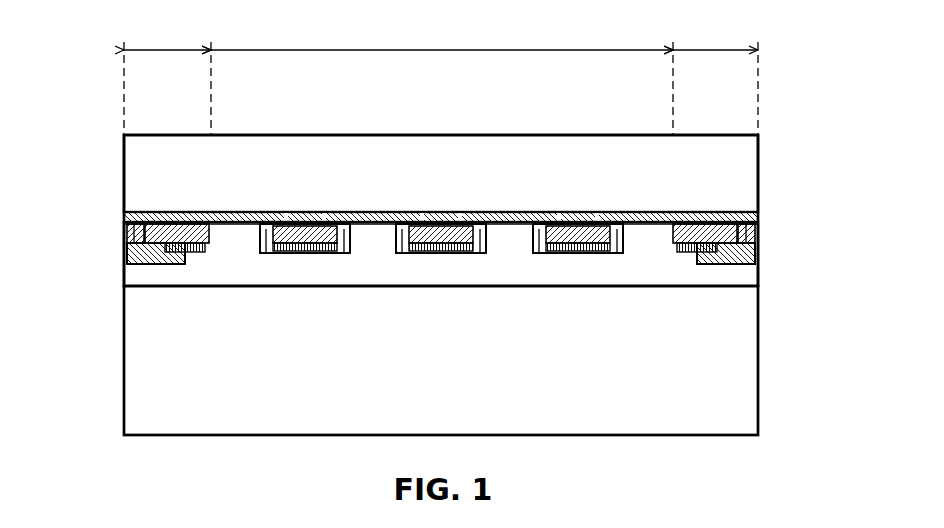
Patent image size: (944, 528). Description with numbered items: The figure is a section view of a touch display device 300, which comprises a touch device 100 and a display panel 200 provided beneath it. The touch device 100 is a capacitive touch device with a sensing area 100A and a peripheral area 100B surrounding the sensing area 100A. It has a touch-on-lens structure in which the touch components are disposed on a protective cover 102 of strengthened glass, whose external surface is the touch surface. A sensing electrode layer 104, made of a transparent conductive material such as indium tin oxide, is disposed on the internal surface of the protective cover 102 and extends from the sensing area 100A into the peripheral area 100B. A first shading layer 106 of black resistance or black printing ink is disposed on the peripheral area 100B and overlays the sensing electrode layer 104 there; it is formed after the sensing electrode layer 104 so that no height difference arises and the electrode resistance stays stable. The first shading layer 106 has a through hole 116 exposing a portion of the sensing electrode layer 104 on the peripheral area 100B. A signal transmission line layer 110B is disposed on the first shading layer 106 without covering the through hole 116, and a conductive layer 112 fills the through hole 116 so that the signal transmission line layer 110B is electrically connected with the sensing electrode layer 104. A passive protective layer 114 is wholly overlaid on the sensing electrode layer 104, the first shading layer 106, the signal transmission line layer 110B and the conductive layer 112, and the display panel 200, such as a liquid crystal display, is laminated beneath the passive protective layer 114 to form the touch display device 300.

The touch device 100 is at (762, 284).
The sensing area 100A is at (442, 75).
The peripheral area 100B is at (441, 75).
The protective cover 102 is at (131, 162).
The sensing electrode layer 104 is at (133, 213).
The first shading layer 106 is at (131, 232).
The signal transmission line layer 110B is at (195, 254).
The conductive layer 112 is at (131, 256).
The passive protective layer 114 is at (240, 258).
The through hole 116 is at (146, 265).
The display panel 200 is at (131, 413).
The touch display device 300 is at (777, 82).